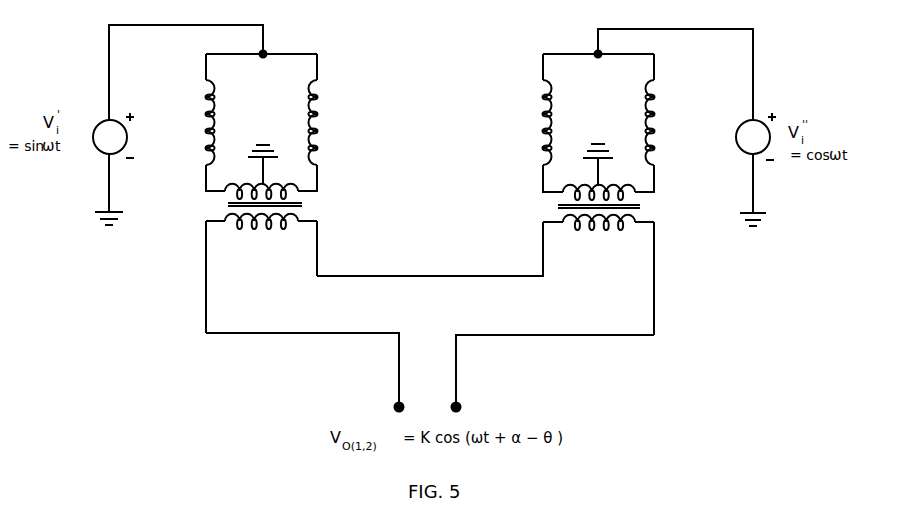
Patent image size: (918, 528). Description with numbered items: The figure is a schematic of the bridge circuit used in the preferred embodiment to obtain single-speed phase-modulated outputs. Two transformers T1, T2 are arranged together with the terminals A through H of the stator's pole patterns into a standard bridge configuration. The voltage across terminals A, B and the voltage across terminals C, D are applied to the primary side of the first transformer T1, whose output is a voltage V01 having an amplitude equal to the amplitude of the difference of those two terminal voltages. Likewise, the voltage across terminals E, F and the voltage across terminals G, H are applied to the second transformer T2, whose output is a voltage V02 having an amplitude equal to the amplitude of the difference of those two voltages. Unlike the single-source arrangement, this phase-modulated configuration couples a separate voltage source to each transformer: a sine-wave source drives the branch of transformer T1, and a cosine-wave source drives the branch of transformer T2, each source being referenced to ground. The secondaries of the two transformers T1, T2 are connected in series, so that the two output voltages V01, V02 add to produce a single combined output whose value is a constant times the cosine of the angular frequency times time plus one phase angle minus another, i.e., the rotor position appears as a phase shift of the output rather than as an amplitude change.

The transformer T1 is at (272, 141).
The transformer T2 is at (583, 141).
The output voltage of transformer T1 V01 is at (261, 277).
The output voltage of transformer T2 V02 is at (598, 278).
The terminal A is at (202, 53).
The terminal B is at (201, 192).
The terminal C is at (320, 53).
The terminal D is at (322, 192).
The terminal E is at (539, 53).
The terminal F is at (538, 192).
The terminal G is at (659, 53).
The terminal H is at (659, 192).